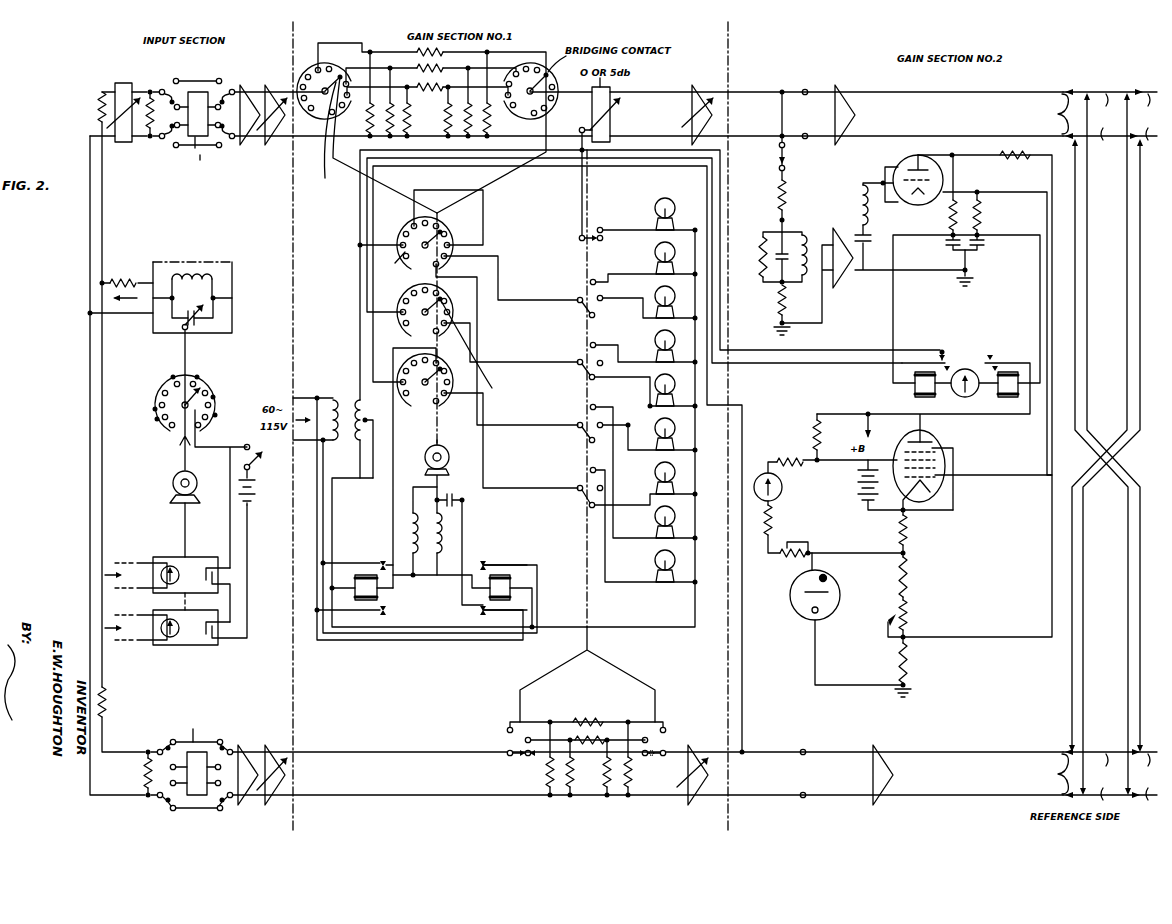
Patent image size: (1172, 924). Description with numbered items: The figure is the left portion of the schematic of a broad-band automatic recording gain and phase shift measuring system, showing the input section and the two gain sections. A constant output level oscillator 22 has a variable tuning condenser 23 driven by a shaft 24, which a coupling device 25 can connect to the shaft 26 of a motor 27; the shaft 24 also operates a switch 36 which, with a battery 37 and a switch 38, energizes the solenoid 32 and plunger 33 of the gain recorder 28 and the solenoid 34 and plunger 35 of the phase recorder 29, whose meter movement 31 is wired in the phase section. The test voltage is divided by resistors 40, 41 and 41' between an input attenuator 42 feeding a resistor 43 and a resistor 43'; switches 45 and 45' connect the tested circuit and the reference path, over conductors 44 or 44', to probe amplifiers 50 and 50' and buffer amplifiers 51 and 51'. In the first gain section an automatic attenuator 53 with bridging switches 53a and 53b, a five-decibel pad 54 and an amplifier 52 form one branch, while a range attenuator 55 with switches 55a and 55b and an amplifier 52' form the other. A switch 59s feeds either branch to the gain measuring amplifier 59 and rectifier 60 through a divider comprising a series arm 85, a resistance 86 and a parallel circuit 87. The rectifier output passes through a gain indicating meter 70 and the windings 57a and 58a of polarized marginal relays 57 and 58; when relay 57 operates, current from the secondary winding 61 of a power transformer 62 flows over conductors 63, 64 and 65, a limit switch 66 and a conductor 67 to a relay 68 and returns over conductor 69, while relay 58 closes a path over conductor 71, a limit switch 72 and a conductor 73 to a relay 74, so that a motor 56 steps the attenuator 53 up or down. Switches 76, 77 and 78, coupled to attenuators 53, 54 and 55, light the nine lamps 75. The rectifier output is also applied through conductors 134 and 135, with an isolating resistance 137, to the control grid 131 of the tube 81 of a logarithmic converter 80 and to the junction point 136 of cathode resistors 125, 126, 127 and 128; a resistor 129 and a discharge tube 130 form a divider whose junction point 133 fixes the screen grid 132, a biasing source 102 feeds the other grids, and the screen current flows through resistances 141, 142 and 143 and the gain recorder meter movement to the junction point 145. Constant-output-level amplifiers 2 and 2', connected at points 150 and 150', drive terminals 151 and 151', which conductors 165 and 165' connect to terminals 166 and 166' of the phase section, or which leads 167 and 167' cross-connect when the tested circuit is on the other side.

The resistor 41 is at (87, 107).
The input attenuator 42 is at (122, 142).
The resistor 43 is at (137, 137).
The conductors 44 is at (190, 120).
The switches 45 is at (194, 113).
The probe amplifier 50 is at (257, 98).
The buffer amplifier tube 51 is at (260, 135).
The attenuator switch 53a is at (366, 138).
The attenuator switch 53b is at (552, 100).
The automatic attenuator 53 is at (432, 91).
The attenuator 54 is at (611, 122).
The amplifier 52 is at (699, 105).
The broad-band amplifier 2 is at (845, 105).
The terminals 150 is at (809, 113).
The terminals 151 is at (1048, 114).
The conductors 165 is at (1105, 117).
The terminals 166 is at (1145, 117).
The leads 167 is at (1106, 422).
The leads 167' is at (1107, 467).
The terminals 151' is at (1043, 774).
The conductors 165' is at (1102, 777).
The terminals 166' is at (1145, 777).
The rectifier tube 60 is at (896, 164).
The resistance 137 is at (1015, 169).
The gain measuring amplifier 59 is at (851, 259).
The switch 59s is at (782, 158).
The series arm 85 is at (786, 197).
The parallel circuit 87 is at (763, 232).
The resistance 86 is at (778, 302).
The conductor 64 is at (834, 350).
The conductor 65 is at (760, 405).
The conductor 71 is at (824, 365).
The polarized marginal relay 58 is at (917, 350).
The polarized marginal relay 57 is at (1007, 355).
The gain indicating meter 70 is at (965, 368).
The relay winding 58a is at (913, 391).
The relay winding 57a is at (1012, 398).
The conductor 134 is at (1052, 248).
The conductor 135 is at (1052, 268).
The resistor 129 is at (812, 432).
The resistance 141 is at (784, 460).
The junction point 133 is at (822, 462).
The source of biasing potential 102 is at (856, 494).
The resistance 142 is at (775, 524).
The resistance 143 is at (783, 560).
The discharge tube 130 is at (792, 613).
The vacuum tube 81 is at (926, 434).
The screen grid 132 is at (935, 461).
The control grid 131 is at (943, 502).
The logarithmic converter 80 is at (950, 503).
The cathode resistor 125 is at (912, 529).
The junction point 145 is at (907, 554).
The cathode resistor 126 is at (912, 576).
The adjustable cathode resistor 127 is at (912, 613).
The junction point 136 is at (906, 642).
The cathode resistor 128 is at (910, 672).
The resistor 40 is at (122, 280).
The oscillator 22 is at (232, 270).
The variable tuning condenser 23 is at (196, 324).
The shaft 24 is at (182, 344).
The switch 36 is at (216, 390).
The coupling device 25 is at (178, 443).
The motor 27 is at (162, 486).
The shaft 26 is at (188, 518).
The gain recorder 28 is at (194, 558).
The solenoid 32 is at (204, 575).
The plunger 33 is at (196, 601).
The phase recorder 29 is at (196, 648).
The meter movement 31 is at (160, 629).
The solenoid 34 is at (204, 629).
The plunger 35 is at (213, 645).
The switch 38 is at (252, 470).
The battery 37 is at (252, 492).
The resistor 41' is at (117, 702).
The resistor 43' is at (128, 773).
The switches 45' is at (185, 773).
The conductors 44' is at (194, 767).
The probe amplifier 50' is at (261, 764).
The buffer amplifier 51' is at (272, 783).
The conductor 63 is at (358, 326).
The switch 76 is at (477, 307).
The limit switch 72 is at (405, 324).
The limit switch 66 is at (421, 406).
The secondary winding 61 is at (364, 410).
The power transformer 62 is at (360, 446).
The conductor 69 is at (366, 481).
The conductor 67 is at (393, 522).
The motor 56 is at (424, 452).
The conductor 73 is at (465, 515).
The relay 68 is at (388, 600).
The relay 74 is at (476, 600).
The switch 77 is at (590, 241).
The switch 78 is at (576, 486).
The indicating lamps 75 is at (678, 461).
The attenuator switch 55a is at (513, 757).
The attenuator switch 55b is at (663, 758).
The attenuator 55 is at (586, 758).
The amplifier 52' is at (694, 762).
The terminals 150' is at (784, 773).
The broad-band amplifier 2' is at (885, 766).